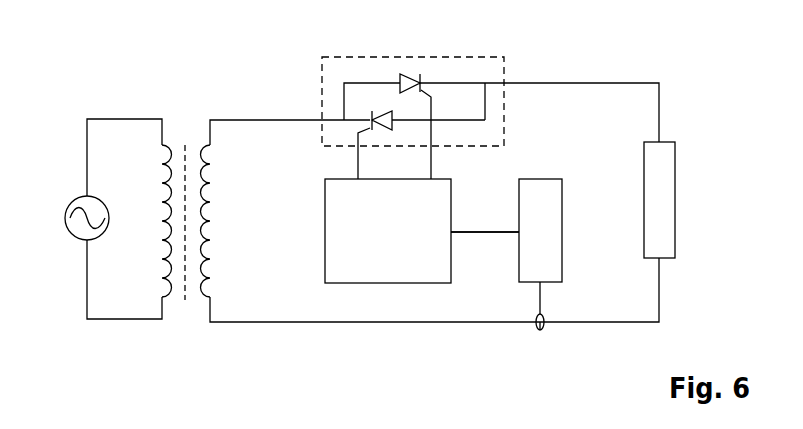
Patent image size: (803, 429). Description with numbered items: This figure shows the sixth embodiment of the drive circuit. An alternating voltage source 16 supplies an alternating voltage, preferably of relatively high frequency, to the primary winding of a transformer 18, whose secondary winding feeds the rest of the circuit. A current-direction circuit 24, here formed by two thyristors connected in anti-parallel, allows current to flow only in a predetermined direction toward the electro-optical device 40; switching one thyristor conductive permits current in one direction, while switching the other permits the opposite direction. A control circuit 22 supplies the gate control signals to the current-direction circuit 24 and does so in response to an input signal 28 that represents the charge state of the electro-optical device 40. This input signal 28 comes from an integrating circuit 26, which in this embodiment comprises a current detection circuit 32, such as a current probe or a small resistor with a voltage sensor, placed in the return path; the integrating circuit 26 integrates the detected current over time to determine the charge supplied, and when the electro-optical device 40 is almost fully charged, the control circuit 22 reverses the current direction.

The alternating voltage source 16 is at (73, 240).
The transformer 18 is at (180, 310).
The control circuit 22 is at (390, 247).
The current-direction circuit 24 is at (504, 70).
The integrating circuit 26 is at (555, 280).
The input signal 28 is at (483, 232).
The current detection circuit 32 is at (536, 330).
The electro-optical device 40 is at (668, 180).